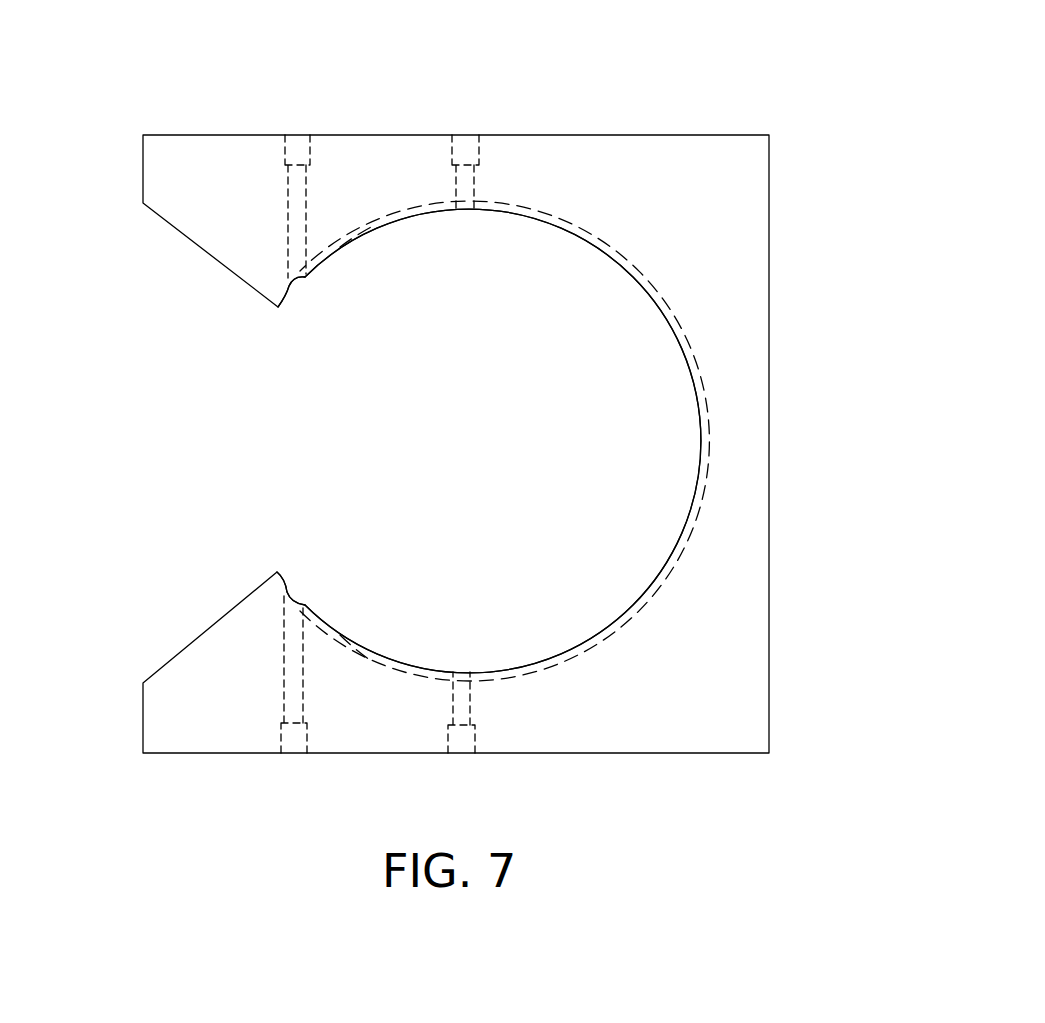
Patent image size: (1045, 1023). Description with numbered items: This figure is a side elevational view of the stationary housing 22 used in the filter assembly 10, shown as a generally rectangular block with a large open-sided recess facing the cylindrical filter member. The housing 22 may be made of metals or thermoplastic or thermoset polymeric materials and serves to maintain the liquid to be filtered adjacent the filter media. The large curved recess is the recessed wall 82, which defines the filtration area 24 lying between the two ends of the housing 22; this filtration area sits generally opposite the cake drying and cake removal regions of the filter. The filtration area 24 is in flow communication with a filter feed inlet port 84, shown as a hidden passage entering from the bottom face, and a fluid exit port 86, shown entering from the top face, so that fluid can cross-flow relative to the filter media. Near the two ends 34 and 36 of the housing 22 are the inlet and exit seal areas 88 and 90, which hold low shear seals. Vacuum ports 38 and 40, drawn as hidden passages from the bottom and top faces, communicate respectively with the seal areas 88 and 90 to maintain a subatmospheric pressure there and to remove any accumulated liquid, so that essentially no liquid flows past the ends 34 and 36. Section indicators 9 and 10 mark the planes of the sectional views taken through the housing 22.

The section line 9- 9 is at (769, 35).
The filter assembly 10 is at (870, 222).
The stationary housing 22 is at (623, 134).
The filtration area 24 is at (663, 306).
The edge of housing 34 is at (278, 307).
The edge of housing 36 is at (277, 572).
The seal suction port 38 is at (296, 740).
The seal suction port 40 is at (295, 152).
The recessed wall 82 is at (609, 248).
The filter feed inlet port 84 is at (470, 672).
The fluid exit port 86 is at (466, 214).
The inlet seal area 88 is at (348, 643).
The exit seal area 90 is at (367, 228).